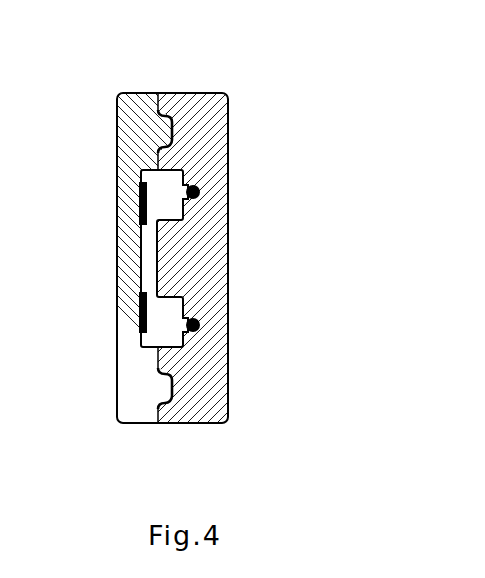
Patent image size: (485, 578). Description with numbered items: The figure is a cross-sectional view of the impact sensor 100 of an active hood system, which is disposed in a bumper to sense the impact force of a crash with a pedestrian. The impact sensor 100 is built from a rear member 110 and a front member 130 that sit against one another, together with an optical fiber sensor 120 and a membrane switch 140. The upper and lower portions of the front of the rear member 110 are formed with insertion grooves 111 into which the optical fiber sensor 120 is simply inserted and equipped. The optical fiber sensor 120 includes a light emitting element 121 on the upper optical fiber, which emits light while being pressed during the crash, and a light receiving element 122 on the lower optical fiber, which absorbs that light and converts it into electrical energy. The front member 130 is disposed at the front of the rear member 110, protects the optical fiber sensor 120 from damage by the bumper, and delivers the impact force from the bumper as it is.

The impact sensor 100 is at (312, 56).
The rear member 110 is at (224, 125).
The insertion groove 111 is at (201, 330).
The optical fiber sensor 120 is at (274, 243).
The light emitting element 121 is at (199, 192).
The light receiving element 122 is at (200, 321).
The front member 130 is at (122, 134).
The membrane switch 140 is at (140, 203).